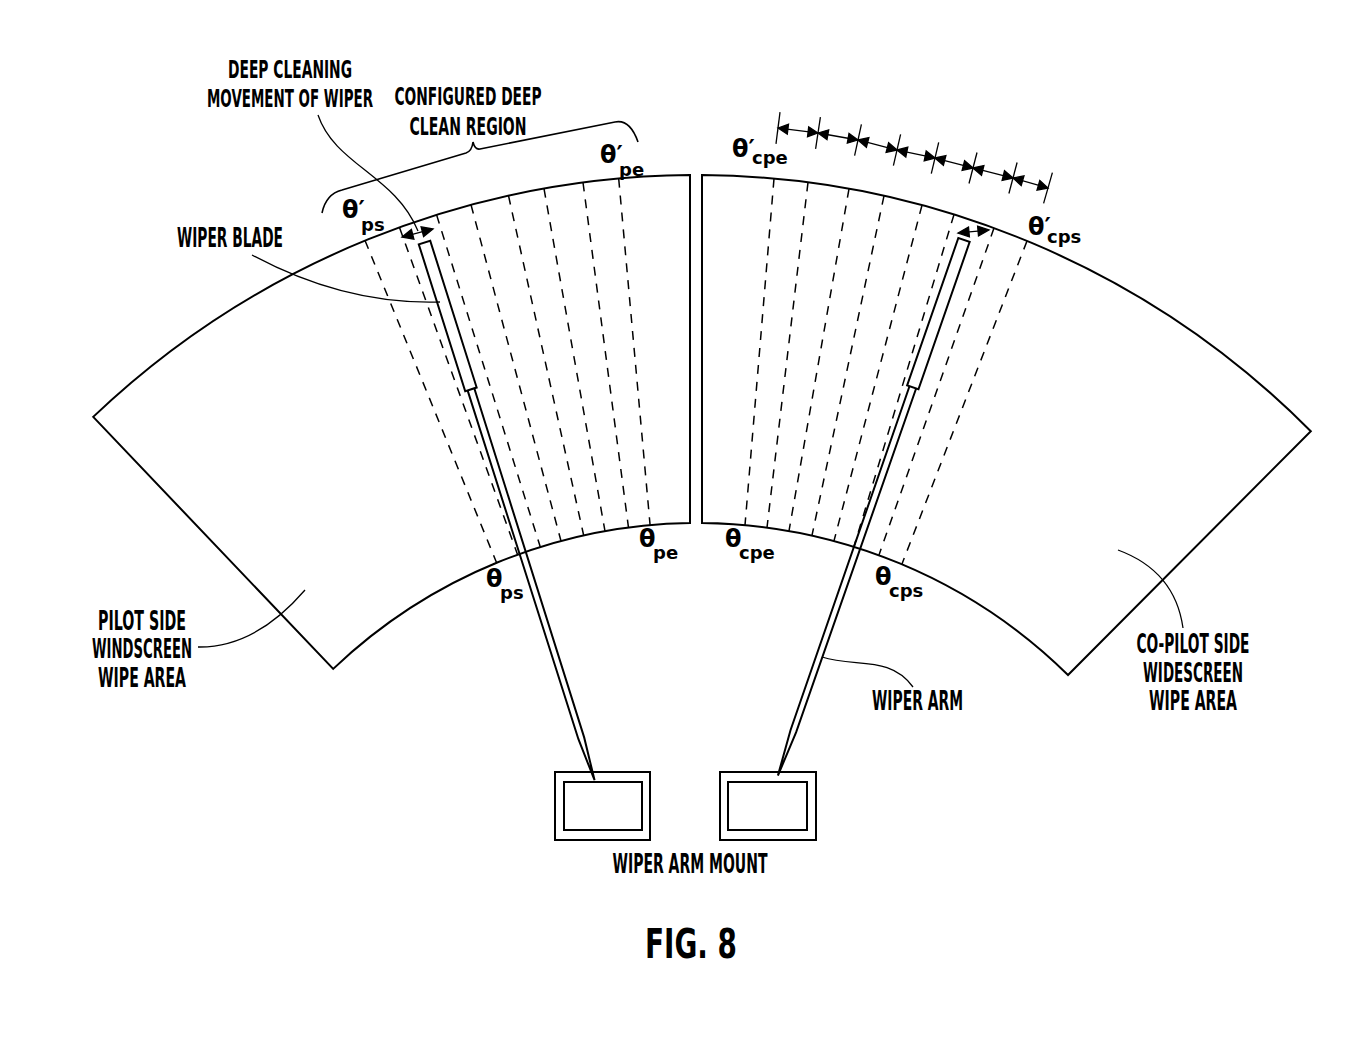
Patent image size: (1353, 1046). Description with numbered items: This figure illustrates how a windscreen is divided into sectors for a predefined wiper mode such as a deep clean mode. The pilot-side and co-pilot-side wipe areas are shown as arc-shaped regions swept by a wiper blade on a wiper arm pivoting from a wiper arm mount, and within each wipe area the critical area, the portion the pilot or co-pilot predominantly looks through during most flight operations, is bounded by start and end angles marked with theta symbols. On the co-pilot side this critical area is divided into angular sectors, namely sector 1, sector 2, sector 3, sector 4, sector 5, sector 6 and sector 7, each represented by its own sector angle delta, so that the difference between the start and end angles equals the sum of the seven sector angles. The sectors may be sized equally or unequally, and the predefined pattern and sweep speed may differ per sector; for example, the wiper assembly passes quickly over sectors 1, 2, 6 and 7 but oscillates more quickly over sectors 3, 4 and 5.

The sector 1 is at (982, 334).
The sector 2 is at (948, 322).
The sector 3 is at (915, 313).
The sector 4 is at (886, 303).
The sector 5 is at (856, 298).
The sector 6 is at (825, 290).
The sector 7 is at (782, 286).